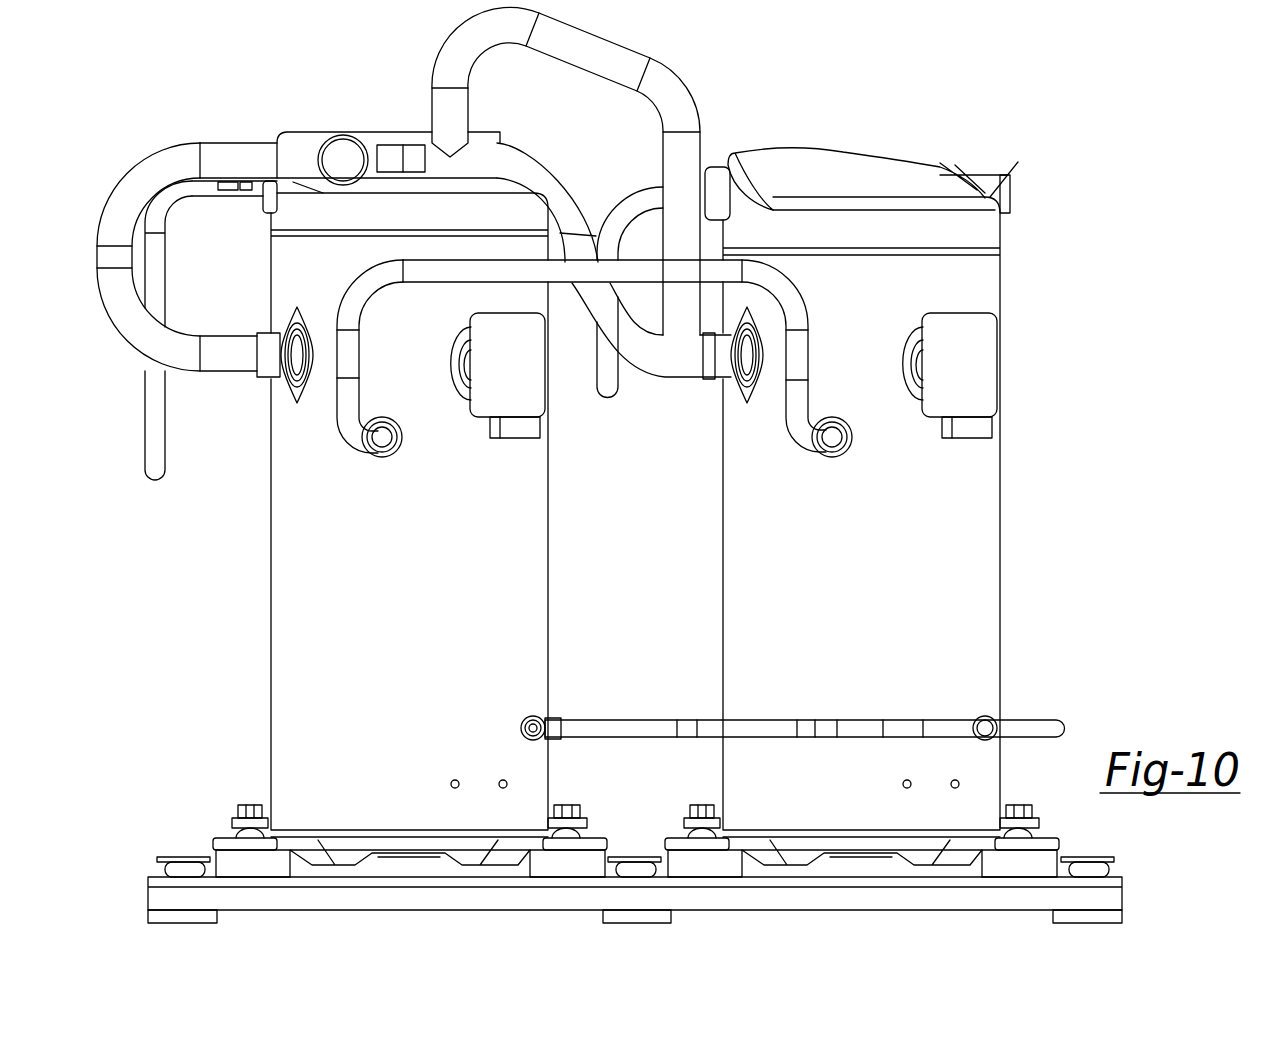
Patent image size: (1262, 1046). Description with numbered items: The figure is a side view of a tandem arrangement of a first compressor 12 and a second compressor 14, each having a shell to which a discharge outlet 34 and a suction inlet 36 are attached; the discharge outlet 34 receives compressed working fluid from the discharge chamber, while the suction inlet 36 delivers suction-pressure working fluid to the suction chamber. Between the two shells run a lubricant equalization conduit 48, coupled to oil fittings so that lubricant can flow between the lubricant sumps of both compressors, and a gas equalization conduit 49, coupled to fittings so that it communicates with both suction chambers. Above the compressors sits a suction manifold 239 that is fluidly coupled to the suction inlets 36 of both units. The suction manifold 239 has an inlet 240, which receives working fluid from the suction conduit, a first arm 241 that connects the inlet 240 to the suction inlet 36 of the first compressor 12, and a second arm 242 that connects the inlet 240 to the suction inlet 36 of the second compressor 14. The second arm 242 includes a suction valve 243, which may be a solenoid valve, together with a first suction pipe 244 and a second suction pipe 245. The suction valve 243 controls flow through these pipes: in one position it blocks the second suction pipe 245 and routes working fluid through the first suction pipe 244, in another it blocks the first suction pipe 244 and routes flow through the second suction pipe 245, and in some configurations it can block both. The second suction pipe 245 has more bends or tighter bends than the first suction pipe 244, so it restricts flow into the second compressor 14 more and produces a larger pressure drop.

The first compressor 12 is at (266, 633).
The second compressor 14 is at (1005, 513).
The discharge outlet 34 is at (266, 192).
The suction inlet 36 is at (312, 404).
The lubricant equalization conduit 48 is at (864, 720).
The gas equalization conduit 49 is at (788, 292).
The suction manifold 239 is at (635, 38).
The inlet 240 is at (343, 163).
The first arm 241 is at (217, 147).
The second arm 242 is at (423, 129).
The suction valve 243 is at (333, 137).
The first suction pipe 244 is at (596, 323).
The second suction pipe 245 is at (588, 52).